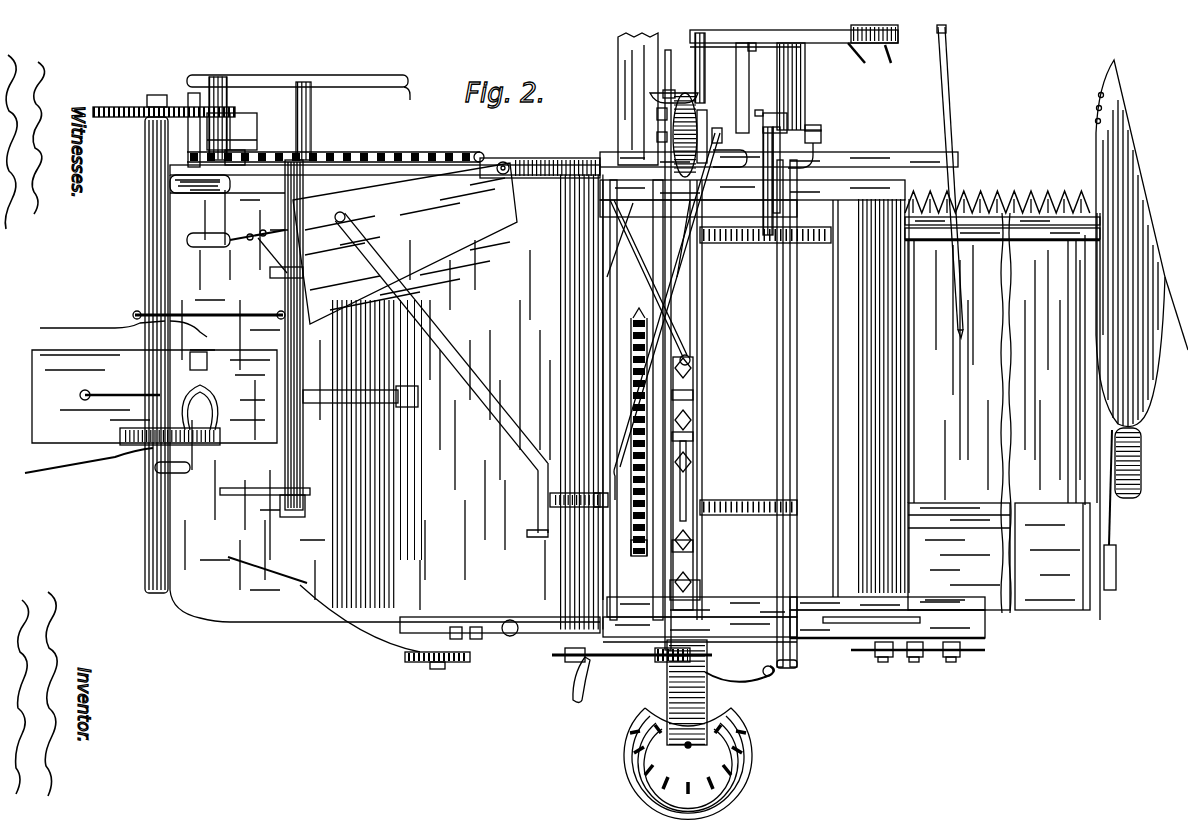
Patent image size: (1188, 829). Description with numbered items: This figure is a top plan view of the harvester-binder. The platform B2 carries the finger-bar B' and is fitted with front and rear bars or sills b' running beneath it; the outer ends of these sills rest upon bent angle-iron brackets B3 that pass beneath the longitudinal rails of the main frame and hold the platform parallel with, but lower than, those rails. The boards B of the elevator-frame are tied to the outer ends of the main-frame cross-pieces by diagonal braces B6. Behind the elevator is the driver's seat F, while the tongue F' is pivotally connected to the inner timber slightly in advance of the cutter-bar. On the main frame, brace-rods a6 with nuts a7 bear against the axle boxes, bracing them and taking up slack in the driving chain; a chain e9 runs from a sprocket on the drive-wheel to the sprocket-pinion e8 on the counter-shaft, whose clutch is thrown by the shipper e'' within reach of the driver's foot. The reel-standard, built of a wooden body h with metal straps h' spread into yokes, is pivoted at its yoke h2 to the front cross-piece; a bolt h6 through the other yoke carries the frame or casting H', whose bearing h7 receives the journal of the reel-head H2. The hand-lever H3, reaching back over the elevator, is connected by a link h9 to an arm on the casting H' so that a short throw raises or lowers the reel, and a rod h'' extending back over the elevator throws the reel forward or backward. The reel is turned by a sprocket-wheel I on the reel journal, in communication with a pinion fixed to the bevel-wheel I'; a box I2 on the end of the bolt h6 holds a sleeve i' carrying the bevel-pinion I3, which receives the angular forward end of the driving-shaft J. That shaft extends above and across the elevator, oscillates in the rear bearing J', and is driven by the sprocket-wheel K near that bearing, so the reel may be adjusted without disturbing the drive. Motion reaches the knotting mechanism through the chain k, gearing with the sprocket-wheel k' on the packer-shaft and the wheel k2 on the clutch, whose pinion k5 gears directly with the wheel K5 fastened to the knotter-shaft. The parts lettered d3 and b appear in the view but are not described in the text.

The wheel K5 is at (118, 107).
The pinion of the clutch k5 is at (235, 103).
The bracket block d3 is at (232, 123).
The sprocket-wheel k2 is at (250, 157).
The chain k is at (335, 149).
The sprocket-wheel k' is at (511, 151).
The tongue F' is at (638, 99).
The sprocket-wheel I is at (670, 347).
The bevel-pinion I3 is at (660, 93).
The sleeve i' is at (685, 122).
The box or bearing I2 is at (657, 114).
The driving-gear or bevel-wheel I' is at (648, 137).
The yoke h2 is at (715, 128).
The frame or casting H' is at (794, 81).
The box or bearing h7 is at (755, 52).
The metal side pieces or straps h' is at (758, 102).
The rod or bar h'' is at (738, 179).
The central portion or body h is at (736, 159).
The link h9 is at (795, 220).
The bolt h6 is at (815, 130).
The reel-head H2 is at (835, 43).
The diagonal bars or braces B6 is at (821, 187).
The boards B is at (752, 400).
The bent angle-iron bracket B3 is at (763, 227).
The hand-lever H3 is at (780, 352).
The driving-shaft J is at (696, 400).
The nut a7 is at (693, 440).
The brace-rod a6 is at (693, 480).
The chain e9 is at (649, 437).
The sprocket-pinion e8 is at (647, 517).
The shipper e'' is at (597, 496).
The bearing J' is at (700, 594).
The sprocket-wheel K is at (663, 660).
The driver's seat F is at (700, 729).
The finger-bar B' is at (1002, 203).
The front and rear bars or sills b' is at (946, 181).
The platform B2 is at (966, 410).
The lower box b is at (999, 556).